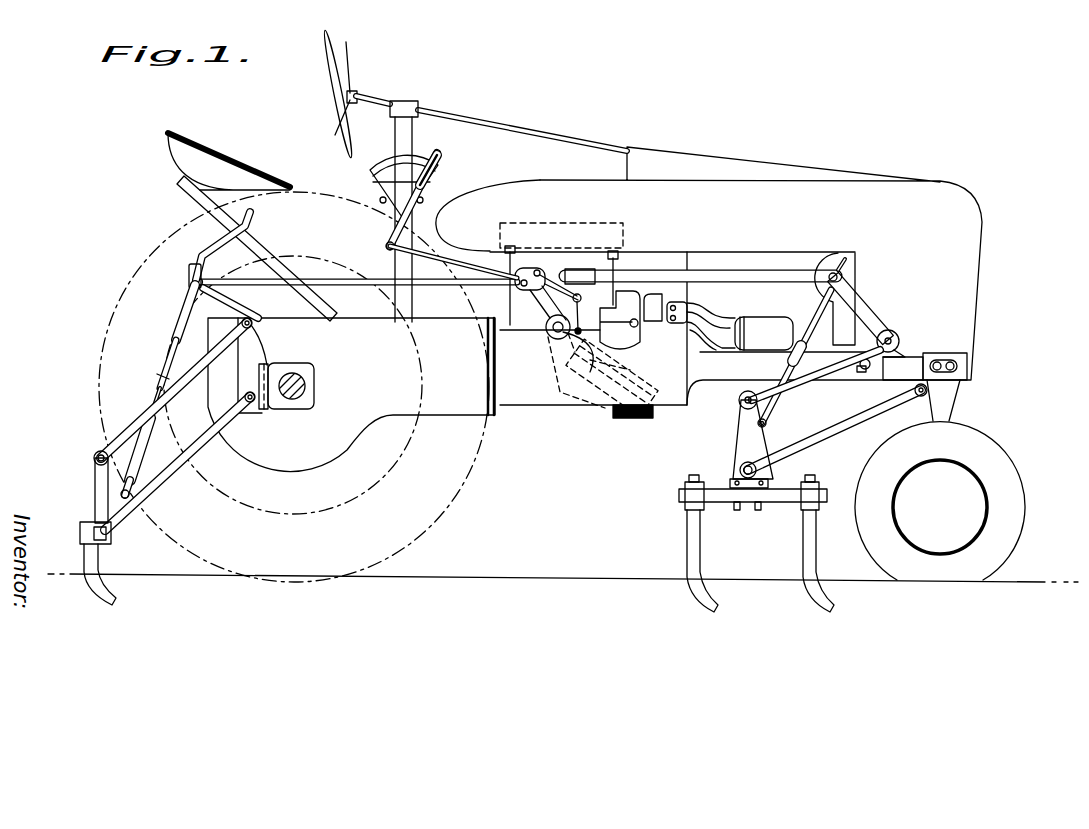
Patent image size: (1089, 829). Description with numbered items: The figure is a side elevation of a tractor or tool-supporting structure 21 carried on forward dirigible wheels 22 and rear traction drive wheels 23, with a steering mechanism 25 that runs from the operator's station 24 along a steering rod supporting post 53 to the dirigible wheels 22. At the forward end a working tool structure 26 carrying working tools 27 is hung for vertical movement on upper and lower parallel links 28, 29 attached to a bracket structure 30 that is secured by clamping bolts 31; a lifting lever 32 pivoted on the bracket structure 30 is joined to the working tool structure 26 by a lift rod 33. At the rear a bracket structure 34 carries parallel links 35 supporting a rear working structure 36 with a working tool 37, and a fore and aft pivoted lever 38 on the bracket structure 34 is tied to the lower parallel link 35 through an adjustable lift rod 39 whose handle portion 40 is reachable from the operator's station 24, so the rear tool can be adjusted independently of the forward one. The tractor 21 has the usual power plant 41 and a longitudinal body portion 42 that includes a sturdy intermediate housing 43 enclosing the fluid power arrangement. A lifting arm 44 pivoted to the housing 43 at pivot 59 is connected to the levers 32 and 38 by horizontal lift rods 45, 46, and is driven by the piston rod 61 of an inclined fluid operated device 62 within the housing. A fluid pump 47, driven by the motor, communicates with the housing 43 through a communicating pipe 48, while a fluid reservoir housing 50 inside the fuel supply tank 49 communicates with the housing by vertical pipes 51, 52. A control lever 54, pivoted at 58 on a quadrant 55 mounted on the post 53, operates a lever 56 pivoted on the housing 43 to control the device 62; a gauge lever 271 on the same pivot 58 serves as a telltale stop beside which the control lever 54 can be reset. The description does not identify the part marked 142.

The tractor or tool-supporting structure 21 is at (690, 190).
The forward dirigible wheels 22 is at (1003, 466).
The traction drive wheels 23 is at (433, 508).
The operator's station 24 is at (185, 160).
The steering mechanism 25 is at (370, 99).
The working tool structure 26 is at (745, 443).
The working tools 27 is at (807, 535).
The upper parallel link 28 is at (803, 380).
The lower parallel link 29 is at (827, 437).
The bracket structure 30 is at (900, 363).
The clamping bolts 31 is at (864, 369).
The lifting lever 32 is at (863, 317).
The lift rod 33 is at (834, 272).
The bracket structure 34 is at (262, 354).
The parallel links 35 is at (194, 437).
The rear working structure 36 is at (100, 497).
The working tool 37 is at (93, 558).
The fore and aft pivoted lever 38 is at (217, 302).
The adjustable lift rod 39 is at (165, 346).
The handle portion 40 is at (248, 232).
The power plant 41 is at (743, 262).
The body portion 42 is at (462, 407).
The intermediate housing 43 is at (547, 400).
The lifting arm 44 is at (540, 340).
The horizontal lift rod 45 is at (647, 277).
The horizontal lift rod 46 is at (345, 258).
The fluid pump 47 is at (760, 327).
The communicating pipe 48 is at (707, 315).
The fuel supply tank 49 is at (540, 190).
The fluid reservoir housing 50 is at (566, 234).
The vertically extending pipe 51 is at (515, 288).
The vertically extending pipe 52 is at (632, 250).
The steering rod supporting post 53 is at (414, 127).
The control lever 54 is at (392, 179).
The quadrant 55 is at (397, 160).
The lever 56 is at (608, 257).
The pivot 58 is at (402, 220).
The pivot 59 is at (466, 265).
The piston rod 61 is at (677, 323).
The fluid operated device 62 is at (566, 378).
The drive unit 142 is at (612, 360).
The gauge lever 271 is at (440, 172).